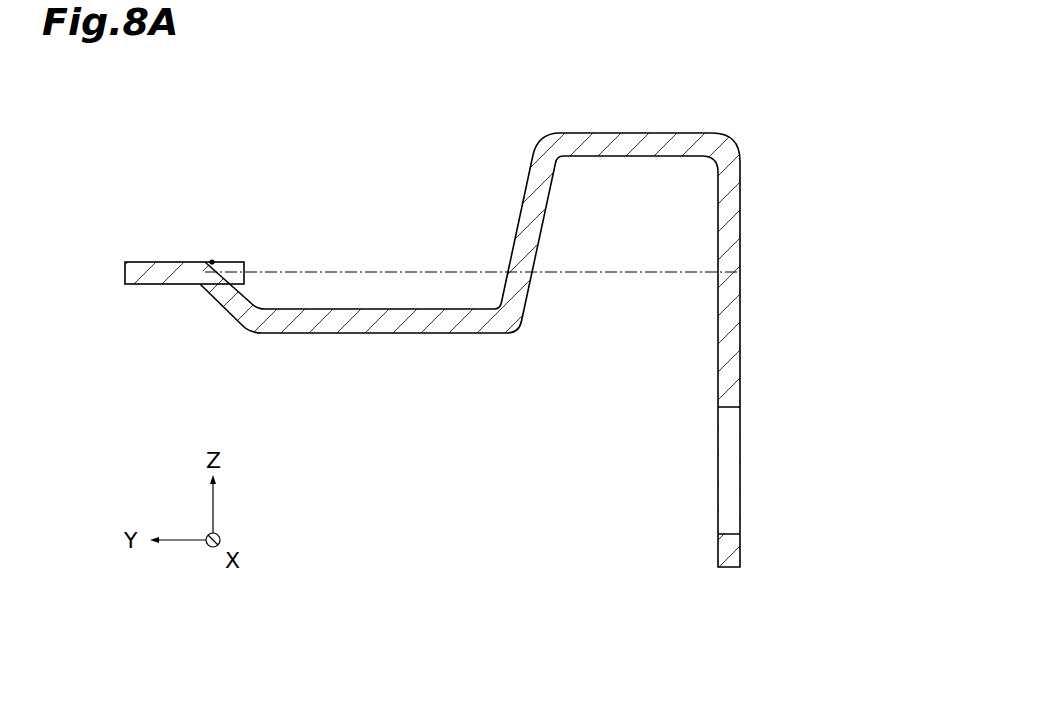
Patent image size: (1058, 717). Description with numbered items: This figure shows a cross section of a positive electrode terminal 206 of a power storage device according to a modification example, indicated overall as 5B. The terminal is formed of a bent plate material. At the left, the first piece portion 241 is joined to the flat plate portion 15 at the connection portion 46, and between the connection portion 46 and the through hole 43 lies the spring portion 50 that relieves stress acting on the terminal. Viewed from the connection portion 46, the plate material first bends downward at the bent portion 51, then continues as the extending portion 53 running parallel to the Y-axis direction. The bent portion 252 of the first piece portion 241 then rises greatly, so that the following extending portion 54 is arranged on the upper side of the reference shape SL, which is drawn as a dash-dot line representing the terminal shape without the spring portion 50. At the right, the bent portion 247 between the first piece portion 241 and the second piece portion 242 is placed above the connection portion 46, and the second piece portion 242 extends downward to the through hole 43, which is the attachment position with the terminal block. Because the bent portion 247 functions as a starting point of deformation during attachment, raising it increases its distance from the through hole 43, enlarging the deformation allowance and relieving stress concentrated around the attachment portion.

The floor structure 5B is at (353, 102).
The flat plate portion 15 is at (128, 252).
The connection portion 46 is at (212, 260).
The spring portion 50 is at (381, 238).
The bent portion 51 is at (222, 308).
The bent portion 252 is at (524, 194).
The extending portion 53 is at (337, 334).
The extending portion 54 is at (642, 133).
The positive electrode terminal 206 is at (586, 318).
The first piece portion 241 is at (384, 366).
The second piece portion 242 is at (774, 318).
The bent portion 247 is at (727, 131).
The through hole 43 is at (728, 409).
The reference shape SL is at (440, 268).